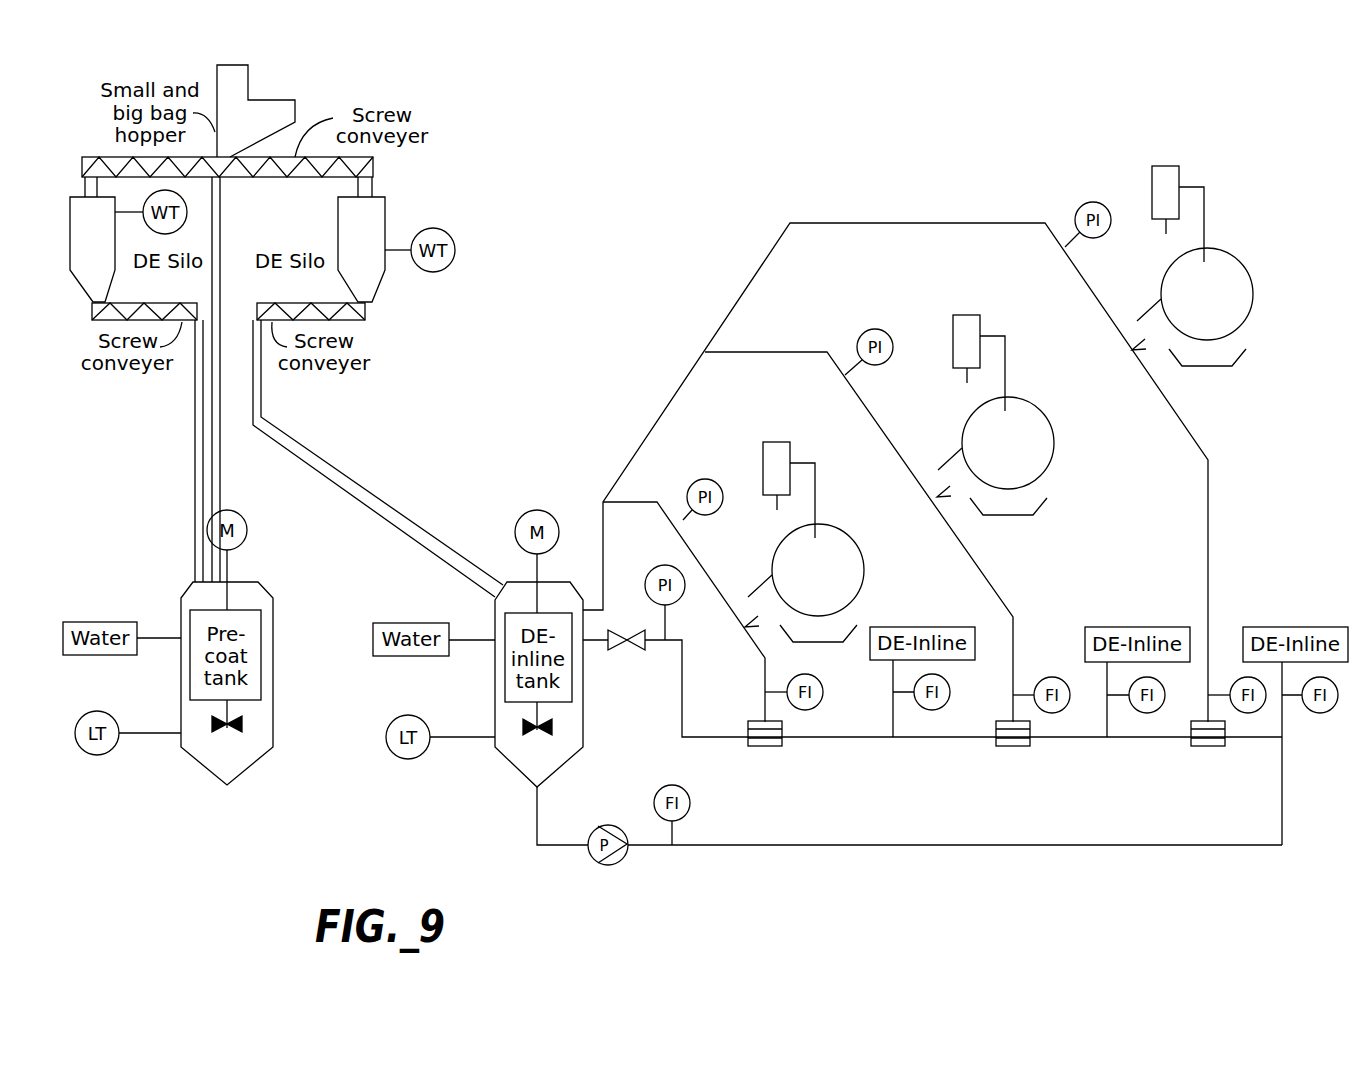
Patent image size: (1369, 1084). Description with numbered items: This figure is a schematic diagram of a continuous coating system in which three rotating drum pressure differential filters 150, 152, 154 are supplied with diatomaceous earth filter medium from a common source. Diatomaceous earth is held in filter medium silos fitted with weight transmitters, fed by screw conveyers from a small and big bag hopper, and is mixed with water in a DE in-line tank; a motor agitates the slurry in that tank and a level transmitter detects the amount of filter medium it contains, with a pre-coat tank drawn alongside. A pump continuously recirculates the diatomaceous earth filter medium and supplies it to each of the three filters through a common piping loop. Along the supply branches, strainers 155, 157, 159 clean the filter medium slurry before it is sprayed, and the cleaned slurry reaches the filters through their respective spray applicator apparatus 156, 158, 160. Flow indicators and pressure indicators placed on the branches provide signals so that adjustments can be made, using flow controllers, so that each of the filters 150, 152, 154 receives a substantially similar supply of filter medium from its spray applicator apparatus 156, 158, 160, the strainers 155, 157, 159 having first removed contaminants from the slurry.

The rotating drum pressure differential filter 150 is at (860, 565).
The rotating drum pressure differential filter 152 is at (1047, 453).
The rotating drum pressure differential filter 154 is at (1247, 303).
The strainer 155 is at (770, 748).
The spray applicator apparatus 156 is at (745, 627).
The strainer 157 is at (1015, 750).
The spray applicator apparatus 158 is at (937, 497).
The strainer 159 is at (1212, 750).
The spray applicator apparatus 160 is at (1132, 350).